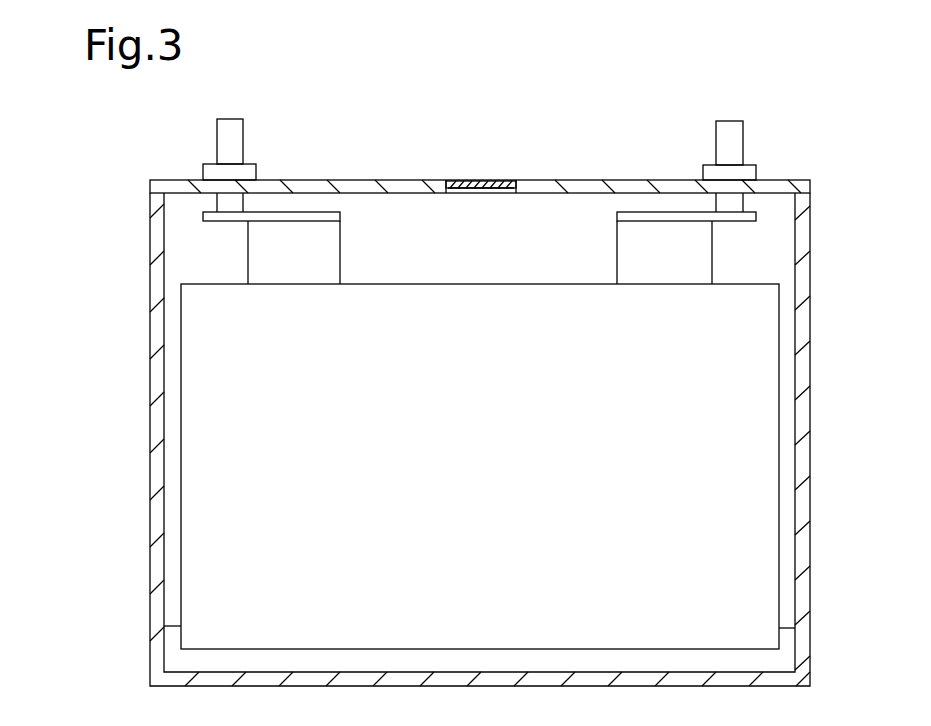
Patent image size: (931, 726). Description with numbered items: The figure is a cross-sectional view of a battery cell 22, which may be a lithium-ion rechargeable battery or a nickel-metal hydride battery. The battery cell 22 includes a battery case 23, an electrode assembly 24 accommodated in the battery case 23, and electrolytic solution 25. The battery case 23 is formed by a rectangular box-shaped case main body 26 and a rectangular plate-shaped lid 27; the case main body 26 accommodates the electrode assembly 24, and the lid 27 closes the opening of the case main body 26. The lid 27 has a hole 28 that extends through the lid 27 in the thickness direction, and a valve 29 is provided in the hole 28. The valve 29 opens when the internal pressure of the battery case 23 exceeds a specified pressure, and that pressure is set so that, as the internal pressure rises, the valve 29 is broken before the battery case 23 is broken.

The battery cell 22 is at (96, 152).
The battery case 23 is at (94, 188).
The electrode assembly 24 is at (780, 420).
The electrolytic solution 25 is at (786, 647).
The case main body 26 is at (157, 240).
The lid 27 is at (155, 187).
The hole 28 is at (510, 194).
The valve 29 is at (490, 180).